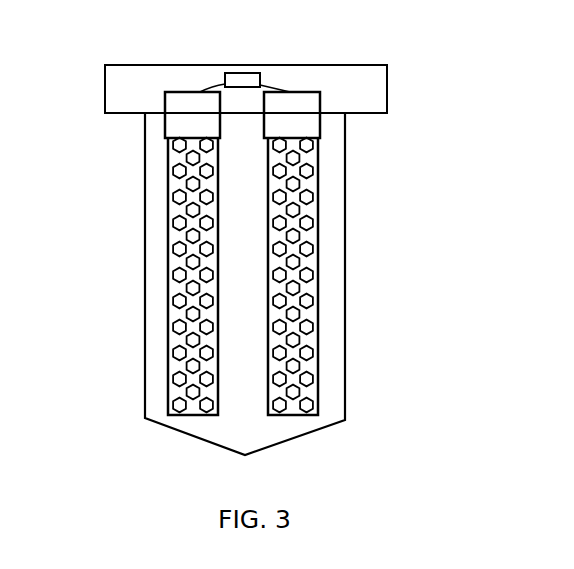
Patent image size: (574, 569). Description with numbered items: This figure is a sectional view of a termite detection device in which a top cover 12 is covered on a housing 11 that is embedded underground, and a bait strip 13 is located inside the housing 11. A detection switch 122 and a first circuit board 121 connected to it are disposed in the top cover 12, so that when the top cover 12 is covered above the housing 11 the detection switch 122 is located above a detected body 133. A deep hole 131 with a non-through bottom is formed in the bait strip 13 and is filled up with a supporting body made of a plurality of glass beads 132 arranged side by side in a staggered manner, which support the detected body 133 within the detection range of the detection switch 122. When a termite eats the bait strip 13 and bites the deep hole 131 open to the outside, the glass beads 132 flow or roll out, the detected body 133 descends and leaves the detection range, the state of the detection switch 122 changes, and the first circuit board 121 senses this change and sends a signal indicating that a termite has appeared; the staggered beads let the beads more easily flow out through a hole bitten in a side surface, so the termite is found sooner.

The housing 11 is at (145, 347).
The top cover 12 is at (105, 90).
The first circuit board 121 is at (236, 73).
The detection switch 122 is at (177, 92).
The bait strip 13 is at (259, 264).
The deep hole 131 is at (168, 252).
The glass bead 132 is at (177, 307).
The detected body 133 is at (167, 122).